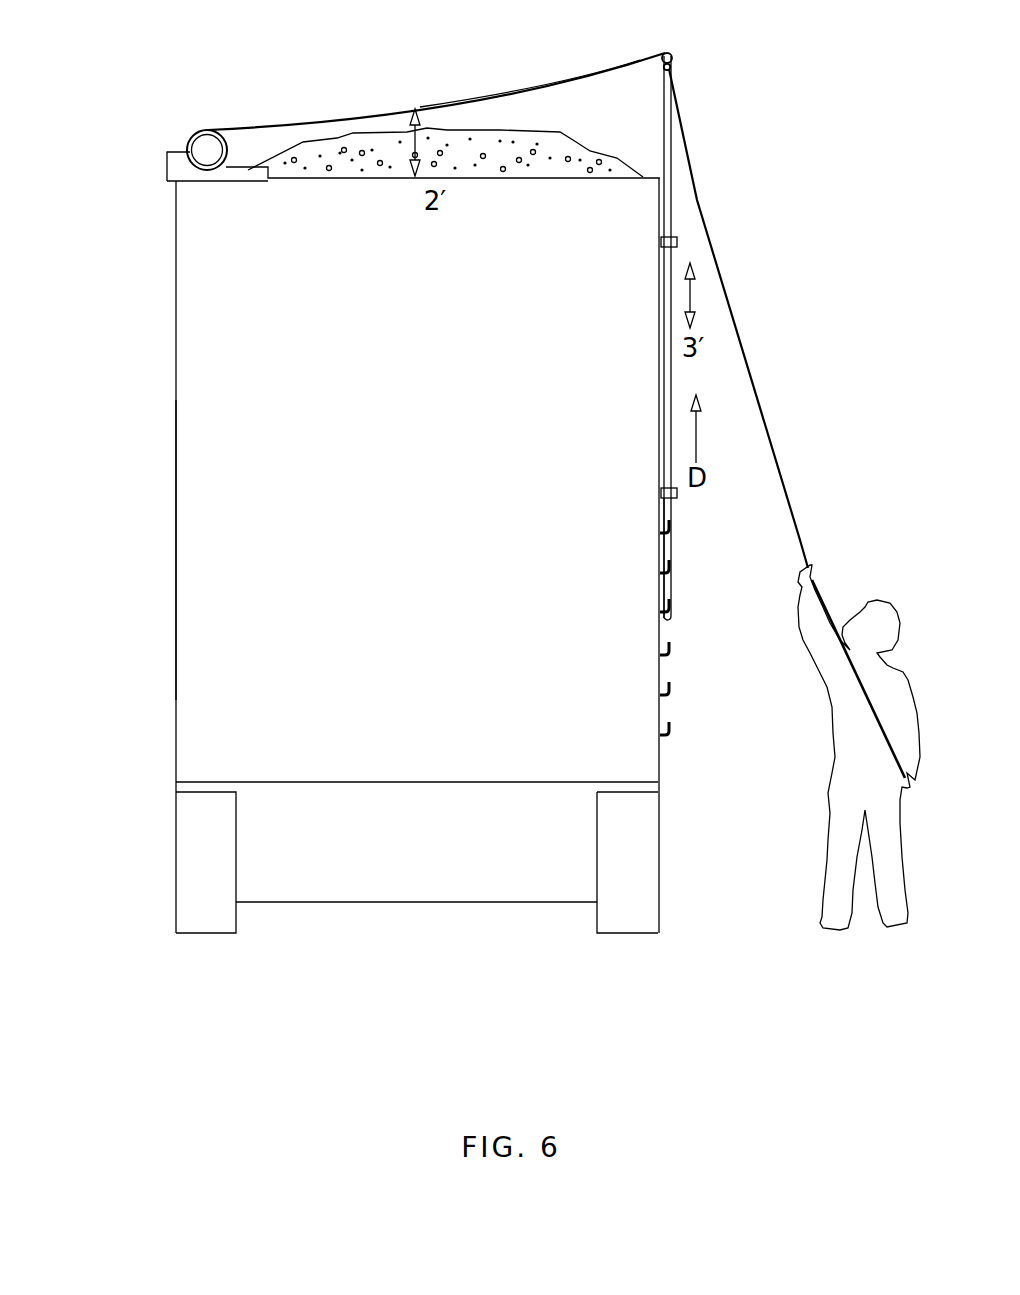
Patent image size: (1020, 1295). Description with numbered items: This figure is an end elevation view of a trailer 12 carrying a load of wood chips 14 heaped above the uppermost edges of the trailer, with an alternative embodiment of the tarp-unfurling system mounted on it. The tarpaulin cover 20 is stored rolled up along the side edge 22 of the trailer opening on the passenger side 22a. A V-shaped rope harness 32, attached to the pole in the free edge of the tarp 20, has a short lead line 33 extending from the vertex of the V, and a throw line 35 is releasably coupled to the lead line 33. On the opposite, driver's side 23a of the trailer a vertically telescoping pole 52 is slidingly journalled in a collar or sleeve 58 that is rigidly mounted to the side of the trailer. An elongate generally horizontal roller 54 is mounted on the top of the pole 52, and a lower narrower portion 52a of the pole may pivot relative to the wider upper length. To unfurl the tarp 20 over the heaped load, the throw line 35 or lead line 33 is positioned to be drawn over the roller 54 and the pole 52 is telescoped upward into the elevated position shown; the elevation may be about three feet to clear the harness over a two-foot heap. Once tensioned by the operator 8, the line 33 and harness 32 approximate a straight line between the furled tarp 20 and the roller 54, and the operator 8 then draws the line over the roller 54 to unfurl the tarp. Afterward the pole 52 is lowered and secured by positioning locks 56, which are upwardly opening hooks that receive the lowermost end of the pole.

The operator 8 is at (832, 862).
The trailer 12 is at (163, 397).
The wood chips 14 is at (478, 142).
The tarpaulin cover 20 is at (188, 138).
The side edge 22 is at (177, 193).
The passenger side 22a is at (177, 545).
The driver's side 23a is at (660, 755).
The rope harness 32 is at (238, 127).
The lead line 33 is at (560, 77).
The throw line 35 is at (765, 438).
The telescoping pole 52 is at (665, 140).
The lower narrower portion 52a is at (667, 515).
The roller 54 is at (667, 53).
The positioning locks 56 is at (667, 657).
The collar or sleeve 58 is at (672, 237).